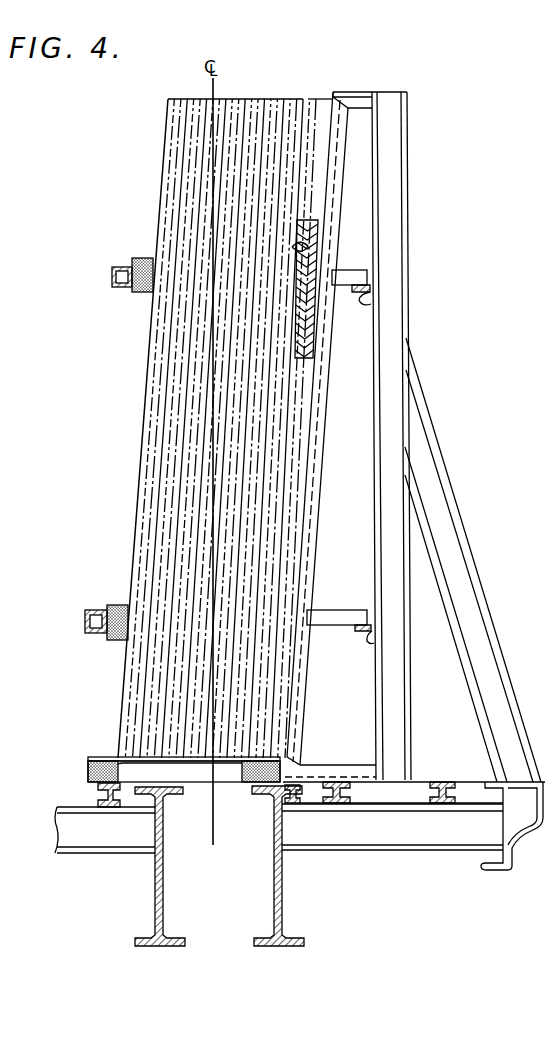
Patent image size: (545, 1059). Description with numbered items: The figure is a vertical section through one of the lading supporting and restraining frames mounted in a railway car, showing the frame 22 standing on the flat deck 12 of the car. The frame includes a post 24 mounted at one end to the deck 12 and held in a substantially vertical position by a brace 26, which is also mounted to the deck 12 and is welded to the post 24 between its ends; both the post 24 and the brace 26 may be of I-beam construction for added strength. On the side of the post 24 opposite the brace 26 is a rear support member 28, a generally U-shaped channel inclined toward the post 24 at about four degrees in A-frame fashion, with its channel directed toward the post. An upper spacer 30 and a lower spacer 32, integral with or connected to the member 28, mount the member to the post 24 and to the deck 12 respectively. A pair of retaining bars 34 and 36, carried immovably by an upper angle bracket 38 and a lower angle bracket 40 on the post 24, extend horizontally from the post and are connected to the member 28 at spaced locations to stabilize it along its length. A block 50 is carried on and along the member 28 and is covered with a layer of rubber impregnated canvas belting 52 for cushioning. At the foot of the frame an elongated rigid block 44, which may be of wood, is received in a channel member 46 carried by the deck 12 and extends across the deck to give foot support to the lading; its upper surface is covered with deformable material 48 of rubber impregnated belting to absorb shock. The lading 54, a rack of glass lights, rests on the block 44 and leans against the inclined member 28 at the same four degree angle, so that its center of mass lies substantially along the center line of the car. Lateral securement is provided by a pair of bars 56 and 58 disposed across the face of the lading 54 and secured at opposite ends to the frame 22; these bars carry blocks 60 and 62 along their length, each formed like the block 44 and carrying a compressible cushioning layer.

The deck 12 is at (421, 790).
The frame 22 is at (445, 433).
The post 24 is at (400, 337).
The brace 26 is at (476, 601).
The rear support member 28 is at (326, 562).
The upper spacer 30 is at (356, 100).
The lower spacer 32 is at (308, 777).
The bar 34 is at (360, 278).
The bar 36 is at (334, 612).
The upper angle bracket 38 is at (366, 302).
The lower angle bracket 40 is at (369, 637).
The block 44 is at (100, 769).
The channel member 46 is at (181, 793).
The deformable material 48 is at (94, 758).
The block 50 is at (305, 250).
The rubber impregnated canvas belting 52 is at (318, 226).
The lading 54 is at (195, 163).
The bar 56 is at (121, 268).
The bar 58 is at (85, 612).
The block 60 is at (143, 292).
The block 62 is at (112, 642).